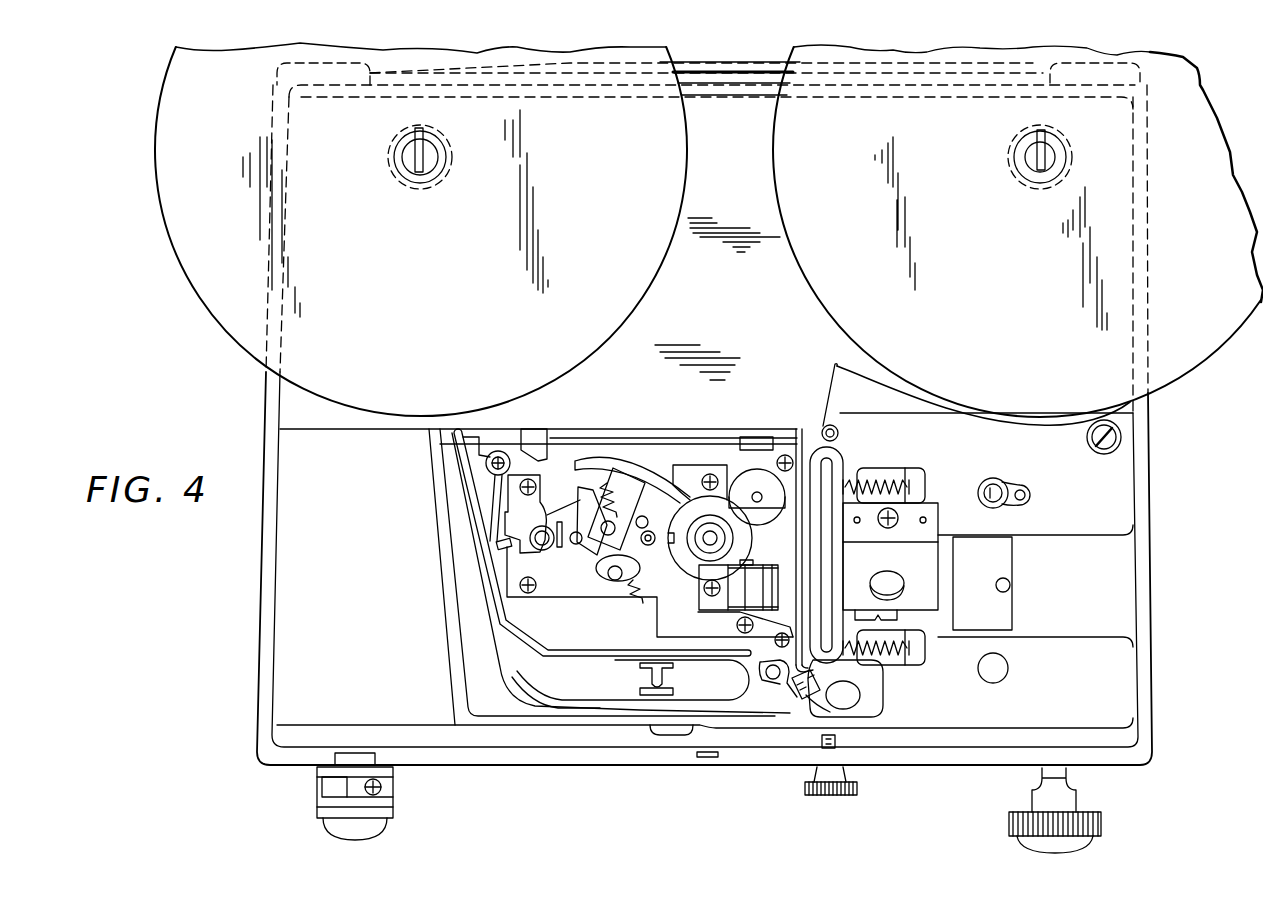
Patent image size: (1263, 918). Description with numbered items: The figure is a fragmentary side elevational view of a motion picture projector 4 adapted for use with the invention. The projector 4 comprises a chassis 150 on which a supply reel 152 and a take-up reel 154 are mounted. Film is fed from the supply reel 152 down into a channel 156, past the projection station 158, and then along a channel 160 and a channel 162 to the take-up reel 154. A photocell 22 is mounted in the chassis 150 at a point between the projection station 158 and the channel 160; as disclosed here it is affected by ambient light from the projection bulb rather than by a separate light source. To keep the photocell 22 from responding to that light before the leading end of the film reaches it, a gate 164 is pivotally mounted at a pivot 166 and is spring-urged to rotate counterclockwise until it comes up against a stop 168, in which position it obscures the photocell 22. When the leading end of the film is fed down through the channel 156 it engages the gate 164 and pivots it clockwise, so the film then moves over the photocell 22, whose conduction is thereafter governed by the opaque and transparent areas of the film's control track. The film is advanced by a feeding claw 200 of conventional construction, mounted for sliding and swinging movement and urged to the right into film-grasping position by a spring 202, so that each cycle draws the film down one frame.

The projector 4 is at (1160, 517).
The photocell 22 is at (866, 676).
The chassis 150 is at (1160, 664).
The supply reel 152 is at (1179, 378).
The take-up reel 154 is at (212, 318).
The channel 156 is at (814, 397).
The projection station 158 is at (800, 587).
The channel 160 is at (718, 705).
The channel 162 is at (462, 495).
The gate 164 is at (803, 687).
The pivot 166 is at (783, 677).
The stop 168 is at (807, 693).
The feeding claw 200 is at (512, 557).
The spring 202 is at (495, 518).